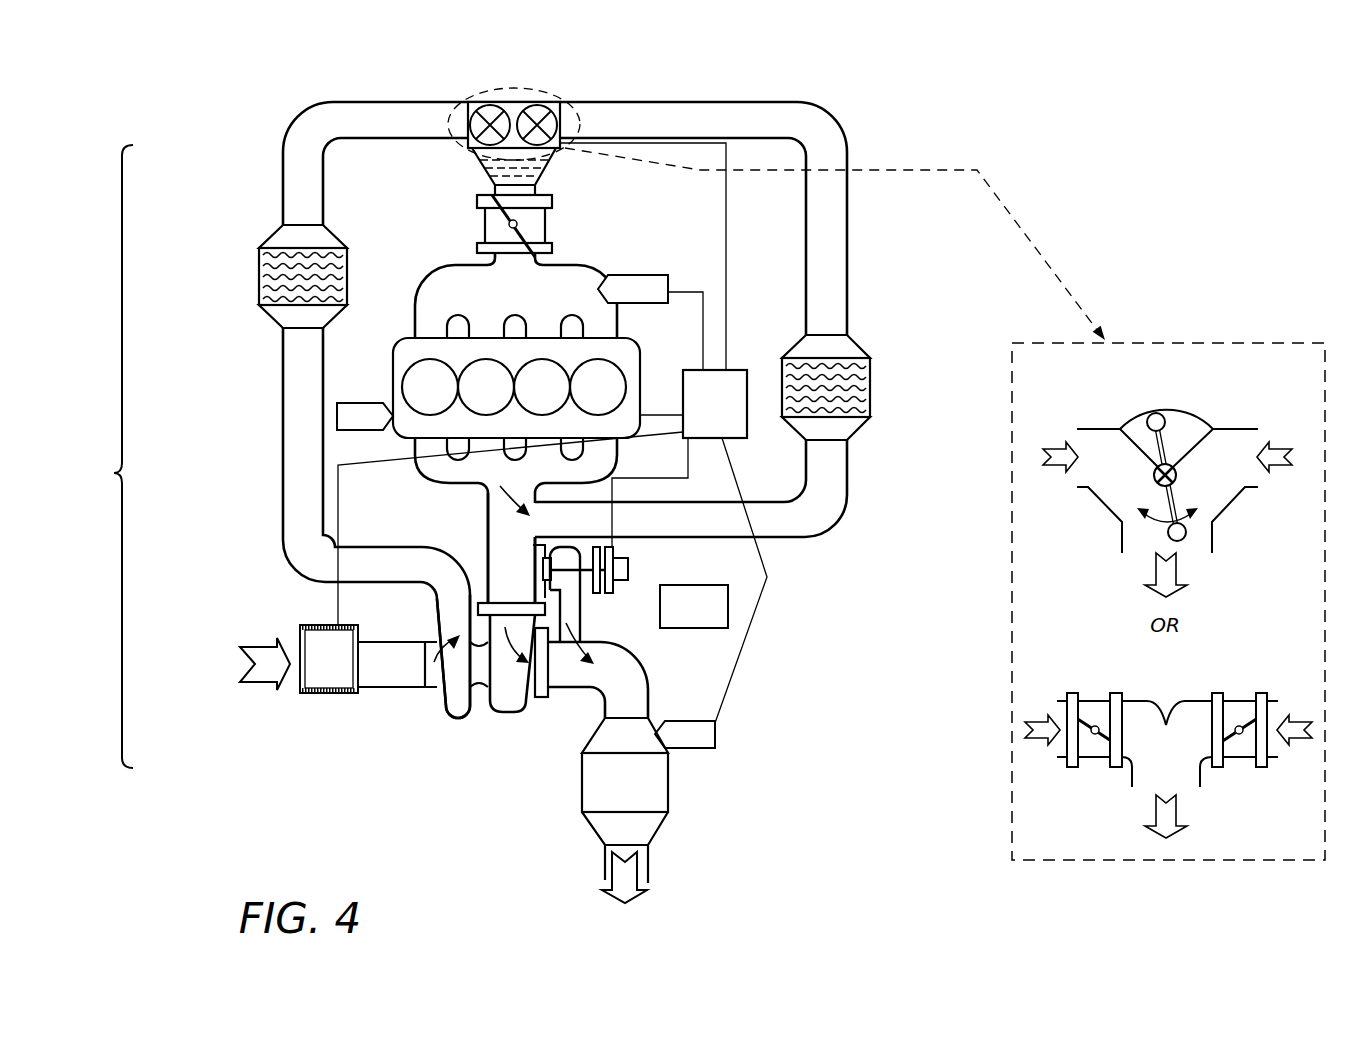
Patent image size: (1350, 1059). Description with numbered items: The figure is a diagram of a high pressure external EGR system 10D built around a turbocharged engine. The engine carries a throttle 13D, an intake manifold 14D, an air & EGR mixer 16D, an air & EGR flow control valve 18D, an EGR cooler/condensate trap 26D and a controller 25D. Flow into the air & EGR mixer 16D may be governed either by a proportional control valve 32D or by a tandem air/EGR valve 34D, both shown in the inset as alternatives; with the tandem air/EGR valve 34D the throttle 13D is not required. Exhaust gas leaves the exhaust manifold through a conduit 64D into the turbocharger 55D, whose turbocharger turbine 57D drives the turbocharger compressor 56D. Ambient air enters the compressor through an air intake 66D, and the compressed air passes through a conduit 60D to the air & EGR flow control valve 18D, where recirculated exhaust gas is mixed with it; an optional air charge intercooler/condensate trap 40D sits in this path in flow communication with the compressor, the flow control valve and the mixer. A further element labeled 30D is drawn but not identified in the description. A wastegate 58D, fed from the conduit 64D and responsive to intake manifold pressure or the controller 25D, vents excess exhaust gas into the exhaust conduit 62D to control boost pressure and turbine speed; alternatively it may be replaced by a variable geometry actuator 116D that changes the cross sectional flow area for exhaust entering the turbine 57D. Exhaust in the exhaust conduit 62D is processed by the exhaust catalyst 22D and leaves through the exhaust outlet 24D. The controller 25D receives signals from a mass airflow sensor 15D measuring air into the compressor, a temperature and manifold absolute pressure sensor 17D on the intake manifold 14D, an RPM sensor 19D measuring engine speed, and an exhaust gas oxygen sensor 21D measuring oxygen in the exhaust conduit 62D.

The system 10D is at (105, 456).
The throttle 13D is at (548, 228).
The intake manifold 14D is at (427, 283).
The mass airflow sensor 15D is at (305, 623).
The air & EGR mixer 16D is at (543, 162).
The temperature and manifold absolute pressure sensor 17D is at (643, 275).
The air & EGR flow control valve 18D is at (565, 96).
The RPM sensor 19D is at (380, 402).
The exhaust gas oxygen sensor 21D is at (715, 748).
The exhaust catalyst 22D is at (583, 783).
The exhaust outlet 24D is at (607, 878).
The controller 25D is at (744, 428).
The EGR cooler/condensate trap 26D is at (857, 346).
The EGR passage 30D is at (830, 528).
The proportional control valve 32D is at (1182, 408).
The tandem air/EGR valve 34D is at (1163, 702).
The air charge intercooler/condensate trap 40D is at (256, 266).
The turbocharger 55D is at (537, 775).
The turbocharger compressor 56D is at (432, 720).
The turbocharger turbine 57D is at (487, 720).
The wastegate 58D is at (630, 558).
The conduit 60D is at (283, 443).
The exhaust conduit 62D is at (648, 680).
The conduit 64D is at (488, 547).
The air intake 66D is at (292, 692).
The variable geometry actuator 116D is at (636, 585).